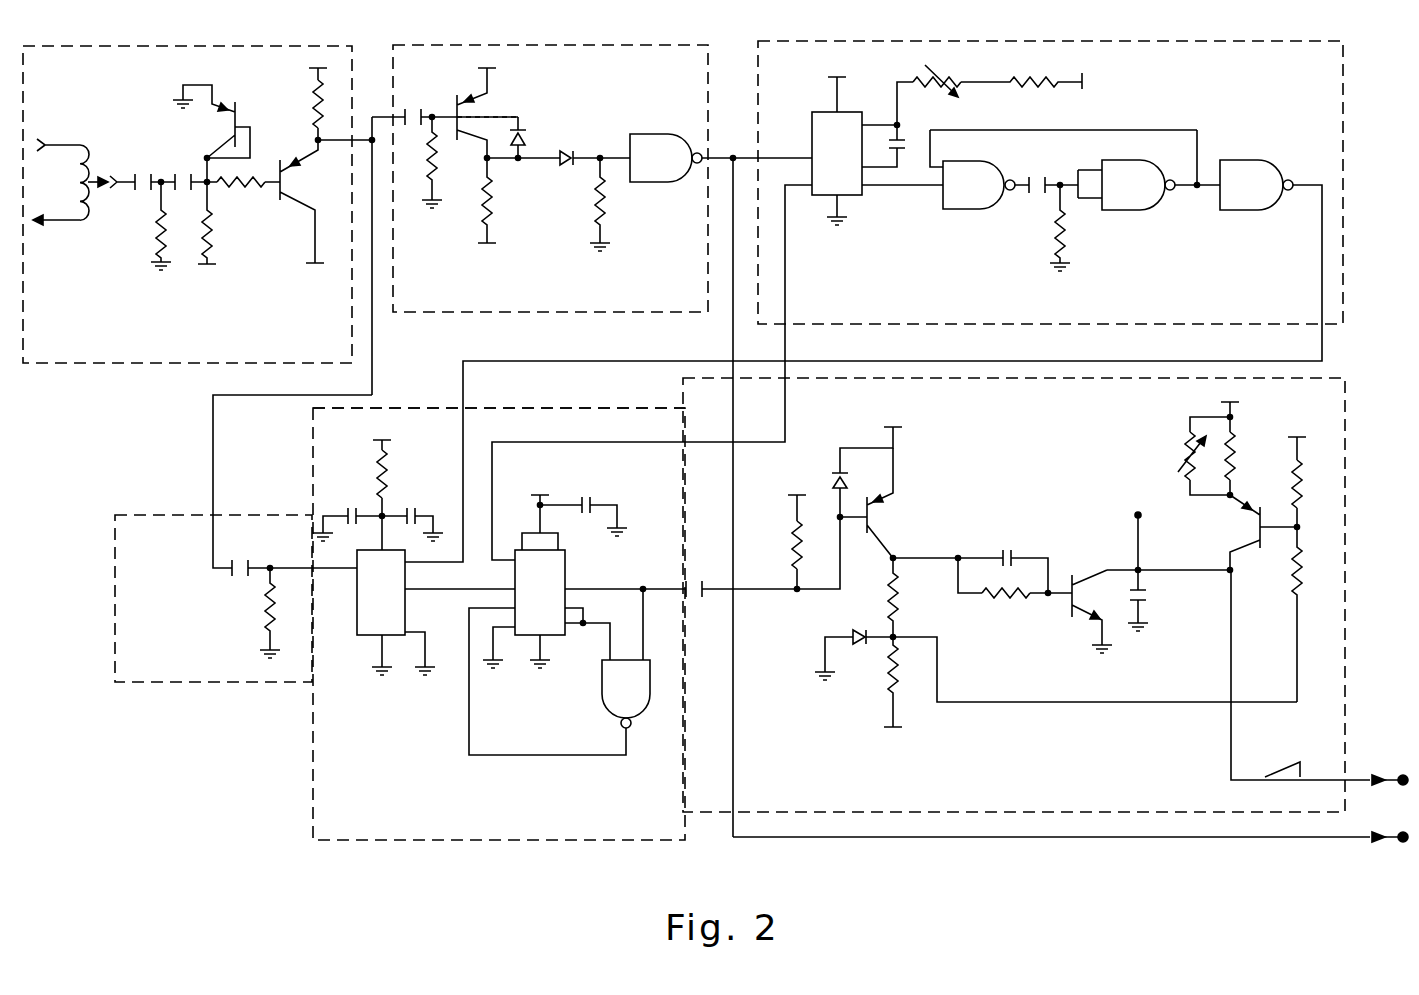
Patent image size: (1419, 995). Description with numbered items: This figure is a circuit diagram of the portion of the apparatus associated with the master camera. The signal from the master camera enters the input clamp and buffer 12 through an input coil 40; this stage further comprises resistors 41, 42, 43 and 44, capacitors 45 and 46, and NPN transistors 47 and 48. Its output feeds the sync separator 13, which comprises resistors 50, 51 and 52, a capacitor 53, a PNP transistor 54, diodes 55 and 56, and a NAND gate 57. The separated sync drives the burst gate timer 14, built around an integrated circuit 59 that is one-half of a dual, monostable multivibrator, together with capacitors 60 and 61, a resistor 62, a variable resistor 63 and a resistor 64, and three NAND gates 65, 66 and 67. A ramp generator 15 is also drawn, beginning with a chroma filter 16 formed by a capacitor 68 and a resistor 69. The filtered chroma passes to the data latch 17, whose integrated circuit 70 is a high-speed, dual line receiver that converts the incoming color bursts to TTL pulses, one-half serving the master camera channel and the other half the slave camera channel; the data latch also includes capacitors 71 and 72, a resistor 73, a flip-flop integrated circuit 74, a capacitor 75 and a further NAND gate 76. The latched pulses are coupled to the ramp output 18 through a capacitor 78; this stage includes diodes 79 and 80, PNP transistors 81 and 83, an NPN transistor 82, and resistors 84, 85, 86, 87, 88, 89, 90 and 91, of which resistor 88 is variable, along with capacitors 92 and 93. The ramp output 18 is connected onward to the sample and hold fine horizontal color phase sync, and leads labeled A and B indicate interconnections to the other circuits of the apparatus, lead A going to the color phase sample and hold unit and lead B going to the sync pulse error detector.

The input clamp and buffer 12 is at (116, 372).
The sync separator 13 is at (486, 314).
The burst gate timer 14 is at (1349, 254).
The ramp generator 15 is at (640, 845).
The chroma filter 16 is at (176, 515).
The data latch 17 is at (622, 408).
The ramp output 18 is at (1345, 505).
The input coil 40 is at (88, 166).
The resistor 41 is at (158, 231).
The resistor 42 is at (212, 226).
The resistor 43 is at (239, 190).
The resistor 44 is at (322, 110).
The capacitor 45 is at (145, 174).
The capacitor 46 is at (187, 190).
The NPN transistor 47 is at (297, 177).
The NPN transistor 48 is at (241, 108).
The resistor 50 is at (440, 160).
The resistor 51 is at (492, 188).
The resistor 52 is at (607, 200).
The capacitor 53 is at (425, 99).
The PNP transistor 54 is at (479, 112).
The diode 55 is at (527, 131).
The diode 56 is at (566, 166).
The NAND gate 57 is at (668, 134).
The integrated circuit 59 is at (812, 136).
The capacitor 60 is at (906, 142).
The capacitor 61 is at (1034, 175).
The resistor 62 is at (1055, 78).
The variable resistor 63 is at (940, 75).
The resistor 64 is at (1068, 240).
The NAND gate 65 is at (990, 212).
The NAND gate 66 is at (1132, 212).
The NAND gate 67 is at (1263, 160).
The capacitor 68 is at (248, 561).
The resistor 69 is at (265, 619).
The integrated circuit 70 is at (357, 613).
The capacitor 71 is at (348, 508).
The capacitor 72 is at (425, 501).
The resistor 73 is at (387, 484).
The flip-flop integrated circuit 74 is at (562, 640).
The capacitor 75 is at (591, 498).
The NAND gate 76 is at (606, 700).
The capacitor 78 is at (702, 582).
The diode 79 is at (836, 472).
The diode 80 is at (854, 645).
The PNP transistor 81 is at (880, 506).
The NPN transistor 82 is at (1072, 621).
The PNP transistor 83 is at (1246, 519).
The resistor 84 is at (792, 549).
The resistor 85 is at (900, 595).
The resistor 86 is at (888, 690).
The resistor 87 is at (1007, 604).
The variable resistor 88 is at (1185, 452).
The resistor 89 is at (1236, 465).
The resistor 90 is at (1291, 484).
The resistor 91 is at (1301, 575).
The capacitor 92 is at (1146, 595).
The capacitor 93 is at (1014, 549).